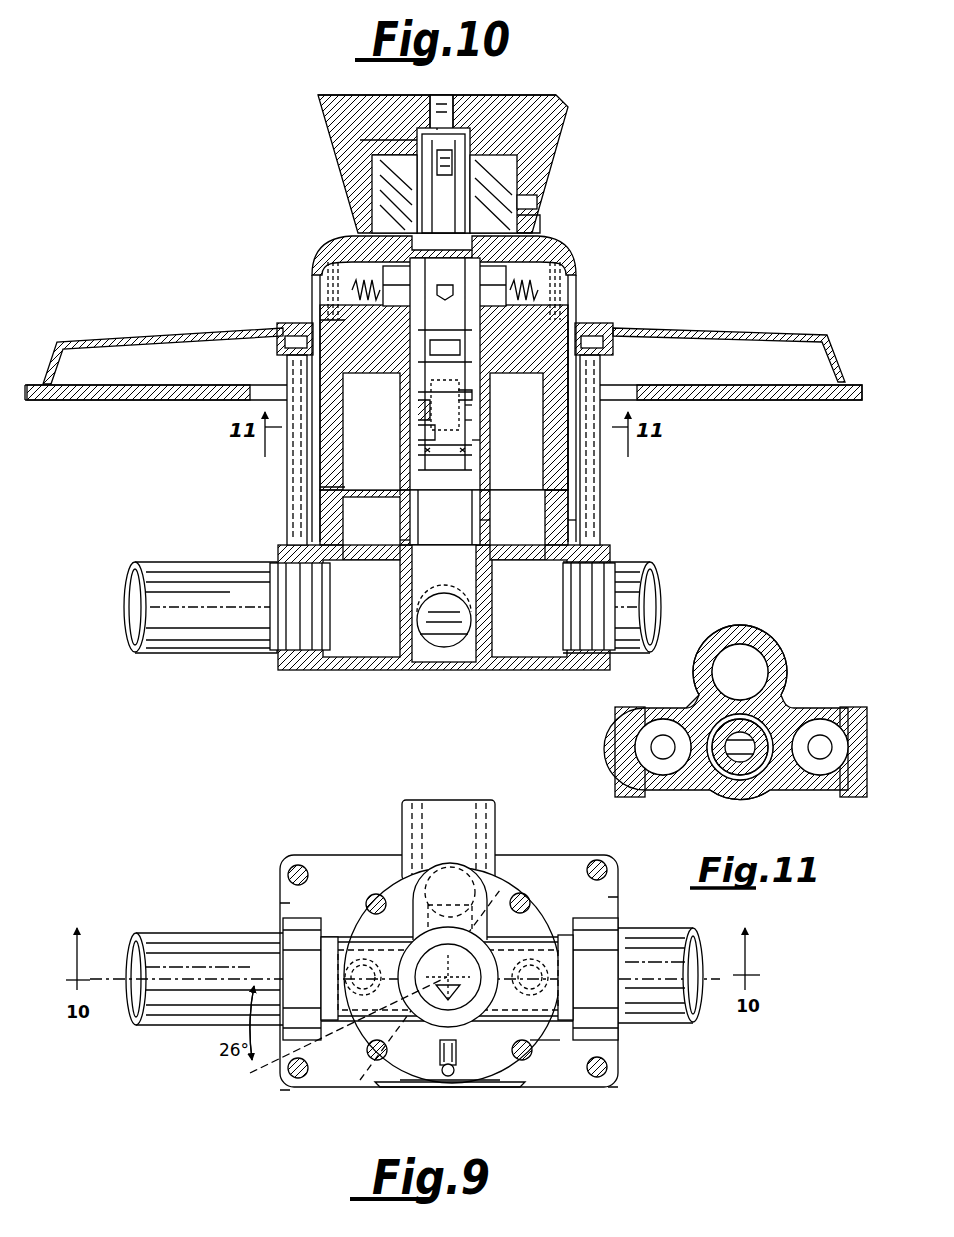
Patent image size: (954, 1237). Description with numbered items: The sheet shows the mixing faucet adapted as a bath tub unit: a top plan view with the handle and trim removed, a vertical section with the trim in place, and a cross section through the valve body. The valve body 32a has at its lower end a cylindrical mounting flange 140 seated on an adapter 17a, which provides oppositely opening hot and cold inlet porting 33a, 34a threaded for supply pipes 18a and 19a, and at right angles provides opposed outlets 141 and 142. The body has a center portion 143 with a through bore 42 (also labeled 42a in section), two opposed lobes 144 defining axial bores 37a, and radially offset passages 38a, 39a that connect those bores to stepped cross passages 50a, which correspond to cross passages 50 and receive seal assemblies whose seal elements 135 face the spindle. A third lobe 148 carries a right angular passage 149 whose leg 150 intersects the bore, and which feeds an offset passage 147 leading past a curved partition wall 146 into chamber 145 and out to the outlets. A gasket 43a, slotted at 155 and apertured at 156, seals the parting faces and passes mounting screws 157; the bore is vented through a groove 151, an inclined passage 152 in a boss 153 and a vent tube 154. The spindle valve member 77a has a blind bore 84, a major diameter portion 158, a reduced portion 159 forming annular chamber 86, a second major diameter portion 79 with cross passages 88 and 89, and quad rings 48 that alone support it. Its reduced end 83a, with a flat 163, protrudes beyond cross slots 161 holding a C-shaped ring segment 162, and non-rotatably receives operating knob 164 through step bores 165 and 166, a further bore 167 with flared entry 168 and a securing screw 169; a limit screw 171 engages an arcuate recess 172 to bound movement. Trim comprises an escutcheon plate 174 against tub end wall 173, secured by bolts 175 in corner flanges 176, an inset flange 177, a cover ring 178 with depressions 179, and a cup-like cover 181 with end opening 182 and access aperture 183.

In FIG. 10, the adapter 17a is at (625, 555).
In FIG. 9, the adapter 17a is at (297, 850).
In FIG. 10, the hot water supply pipe 18a is at (170, 655).
In FIG. 9, the hot water supply pipe 18a is at (160, 1022).
In FIG. 10, the cold water supply pipe 19a is at (655, 568).
In FIG. 9, the cold water supply pipe 19a is at (690, 1012).
In FIG. 9, the valve body 32a is at (548, 1043).
In FIG. 10, the hot water inlet porting 33a is at (360, 658).
In FIG. 10, the cold water inlet porting 34a is at (530, 658).
In FIG. 10, the axial bore 37a is at (572, 490).
In FIG. 11, the axial bore 37a is at (838, 722).
In FIG. 10, the radially offset passage 38a is at (328, 300).
In FIG. 11, the radially offset passage 38a is at (652, 750).
In FIG. 10, the radially offset passage 39a is at (560, 305).
In FIG. 11, the radially offset passage 39a is at (820, 760).
In FIG. 9, the through bore 42 is at (512, 895).
In FIG. 10, the valve bore 42a is at (490, 500).
In FIG. 11, the valve bore 42a is at (750, 742).
In FIG. 10, the gasket 43a is at (578, 516).
In FIG. 10, the quad ring 48 is at (405, 243).
In FIG. 9, the cross passage 50 is at (560, 990).
In FIG. 10, the stepped cross passage 50a is at (345, 246).
In FIG. 10, the spindle valve member 77a is at (470, 140).
In FIG. 9, the spindle valve member 77a is at (465, 1000).
In FIG. 10, the second major diameter portion 79 is at (445, 374).
In FIG. 10, the reduced diameter body portion 83a is at (443, 180).
In FIG. 10, the blind bore 84 is at (490, 392).
In FIG. 11, the blind bore 84 is at (696, 700).
In FIG. 9, the blind bore 84 is at (450, 911).
In FIG. 10, the annular chamber 86 is at (418, 412).
In FIG. 11, the annular chamber 86 is at (762, 712).
In FIG. 10, the cross passage 88 is at (381, 286).
In FIG. 9, the cross passage 88 is at (388, 958).
In FIG. 10, the cross passage 89 is at (508, 286).
In FIG. 9, the cross passage 89 is at (490, 960).
In FIG. 10, the seal element 135 is at (444, 277).
In FIG. 10, the cylindrical mounting flange 140 is at (570, 468).
In FIG. 9, the cylindrical mounting flange 140 is at (543, 915).
In FIG. 10, the outlet 141 is at (440, 655).
In FIG. 9, the outlet 141 is at (490, 816).
In FIG. 11, the outlet 142 is at (748, 798).
In FIG. 9, the outlet 142 is at (390, 1090).
In FIG. 10, the center portion 143 is at (490, 421).
In FIG. 10, the lobe 144 is at (335, 445).
In FIG. 11, the lobe 144 is at (660, 793).
In FIG. 10, the chamber 145 is at (405, 542).
In FIG. 10, the partition wall 146 is at (432, 545).
In FIG. 10, the radially offset passage 147 is at (405, 512).
In FIG. 11, the third lobe 148 is at (752, 642).
In FIG. 9, the third lobe 148 is at (412, 870).
In FIG. 11, the right angular passage 149 is at (762, 665).
In FIG. 9, the right angular passage 149 is at (425, 882).
In FIG. 10, the passage leg 150 is at (490, 406).
In FIG. 9, the passage leg 150 is at (480, 885).
In FIG. 10, the radial groove 151 is at (440, 492).
In FIG. 9, the inclined passage 152 is at (428, 1082).
In FIG. 9, the boss 153 is at (440, 1068).
In FIG. 9, the vent tube 154 is at (470, 1080).
In FIG. 10, the gasket slot 155 is at (490, 522).
In FIG. 10, the gasket aperture 156 is at (396, 492).
In FIG. 9, the mounting screw 157 is at (368, 898).
In FIG. 10, the major diameter body portion 158 is at (490, 443).
In FIG. 10, the reduced diameter body portion 159 is at (418, 392).
In FIG. 10, the cross slot 161 is at (418, 430).
In FIG. 11, the cross slot 161 is at (718, 778).
In FIG. 10, the C-shaped ring segment 162 is at (520, 160).
In FIG. 10, the flat 163 is at (400, 134).
In FIG. 10, the operating knob 164 is at (570, 118).
In FIG. 10, the major diameter step bore 165 is at (375, 165).
In FIG. 10, the reduced diameter step bore 166 is at (392, 100).
In FIG. 10, the further reduced diameter bore 167 is at (426, 100).
In FIG. 10, the flared entry end 168 is at (440, 100).
In FIG. 10, the securing screw 169 is at (454, 102).
In FIG. 10, the limit screw 171 is at (538, 200).
In FIG. 10, the arcuate recess 172 is at (530, 222).
In FIG. 10, the tub end wall 173 is at (790, 400).
In FIG. 10, the escutcheon plate 174 is at (770, 333).
In FIG. 10, the securing bolt 175 is at (290, 490).
In FIG. 9, the securing bolt 175 is at (288, 872).
In FIG. 9, the corner flange 176 is at (285, 903).
In FIG. 10, the inset flange 177 is at (288, 362).
In FIG. 10, the plastic cover ring 178 is at (605, 328).
In FIG. 10, the depression 179 is at (300, 327).
In FIG. 10, the cup-like cover 181 is at (312, 282).
In FIG. 10, the end wall opening 182 is at (490, 252).
In FIG. 10, the aperture 183 is at (578, 270).